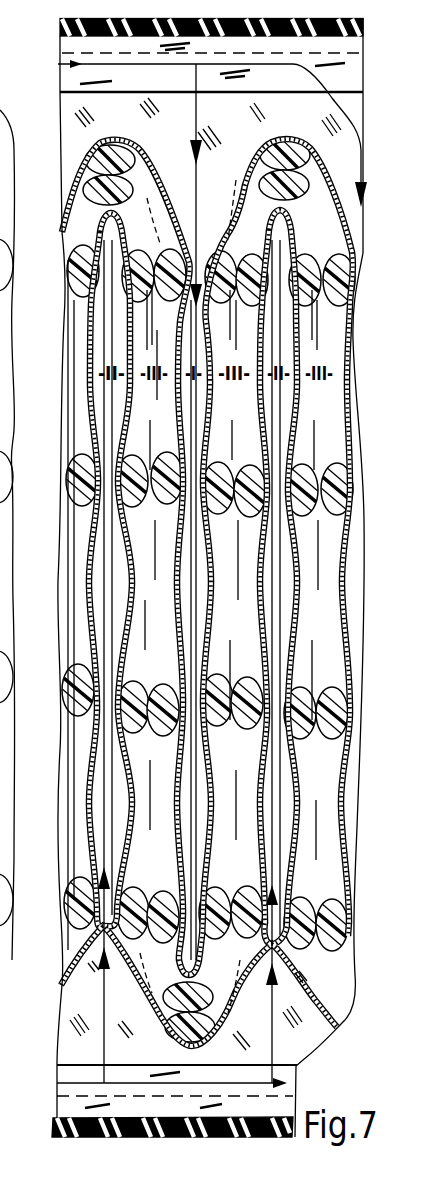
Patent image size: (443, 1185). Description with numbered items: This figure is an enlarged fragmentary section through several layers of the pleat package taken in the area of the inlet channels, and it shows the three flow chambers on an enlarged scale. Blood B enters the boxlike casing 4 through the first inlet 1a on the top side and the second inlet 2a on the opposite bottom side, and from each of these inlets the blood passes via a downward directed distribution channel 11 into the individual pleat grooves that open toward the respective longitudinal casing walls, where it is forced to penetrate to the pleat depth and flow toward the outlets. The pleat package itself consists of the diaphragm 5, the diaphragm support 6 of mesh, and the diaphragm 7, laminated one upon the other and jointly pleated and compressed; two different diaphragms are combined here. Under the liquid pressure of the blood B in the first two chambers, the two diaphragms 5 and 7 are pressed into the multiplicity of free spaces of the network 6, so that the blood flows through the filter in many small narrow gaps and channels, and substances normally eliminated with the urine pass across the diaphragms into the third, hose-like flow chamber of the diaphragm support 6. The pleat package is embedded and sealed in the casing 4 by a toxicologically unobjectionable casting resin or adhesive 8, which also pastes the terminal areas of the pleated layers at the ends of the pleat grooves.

The first inlet 1a is at (72, 20).
The second inlet 2a is at (68, 1137).
The casing 4 is at (62, 78).
The diaphragm 5 is at (291, 565).
The diaphragm support 6 is at (138, 256).
The diaphragm 7 is at (148, 194).
The synthetic resin plastic 8 is at (80, 134).
The distribution channel 11 is at (74, 42).
The blood B is at (70, 64).